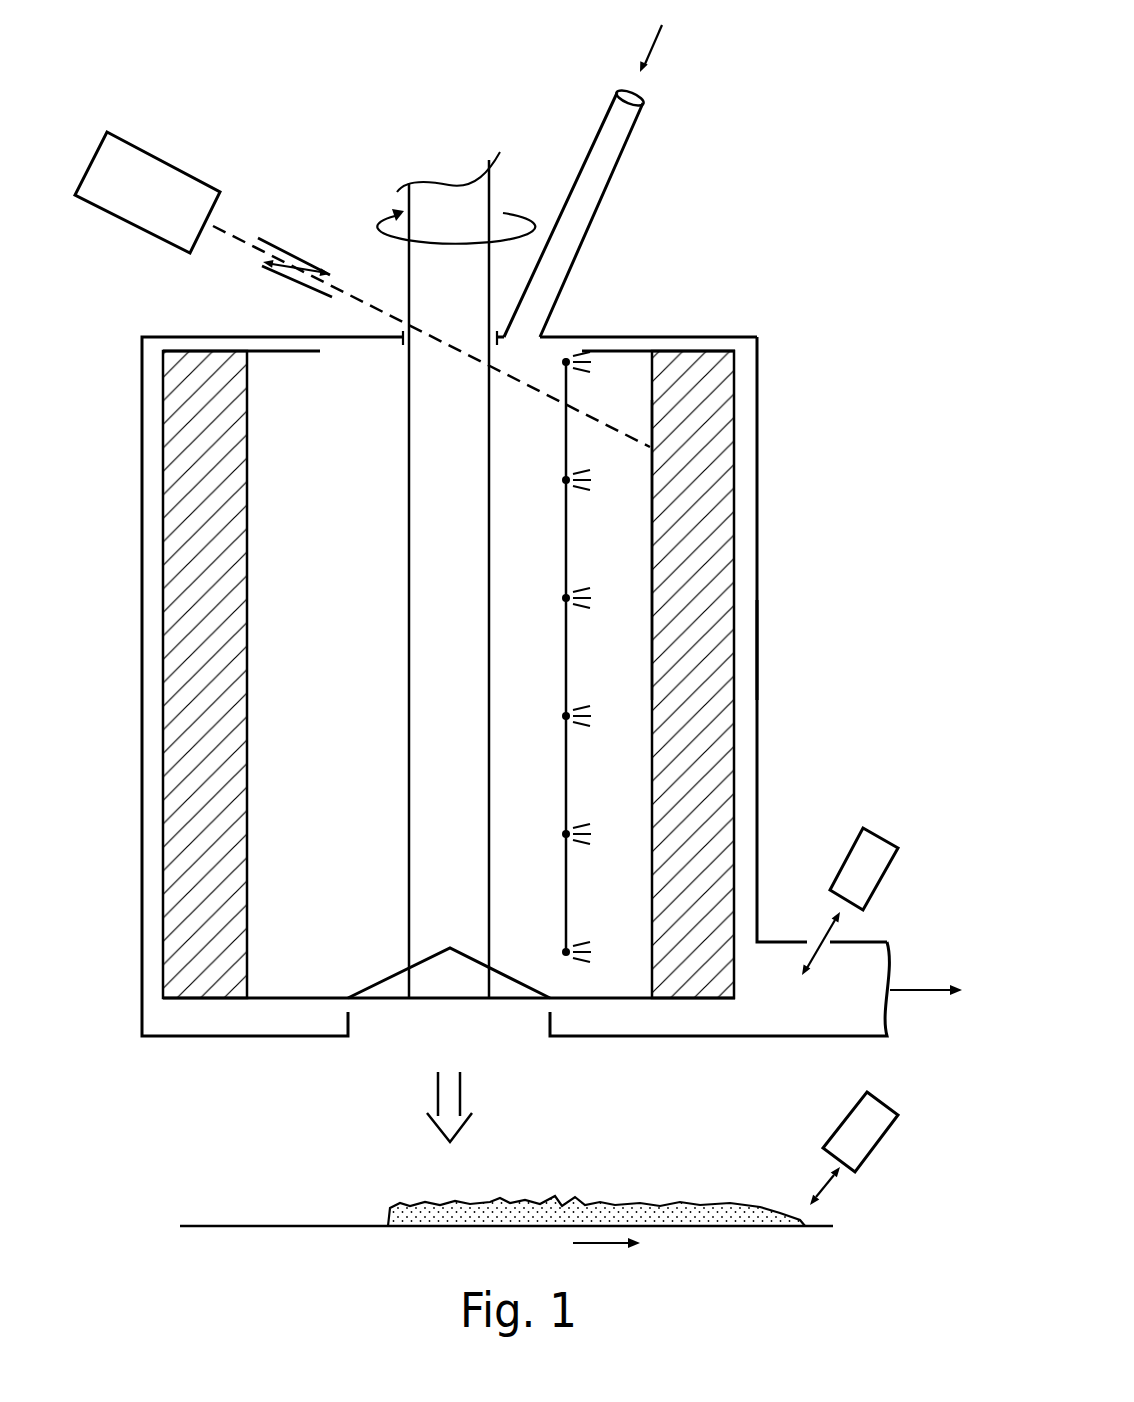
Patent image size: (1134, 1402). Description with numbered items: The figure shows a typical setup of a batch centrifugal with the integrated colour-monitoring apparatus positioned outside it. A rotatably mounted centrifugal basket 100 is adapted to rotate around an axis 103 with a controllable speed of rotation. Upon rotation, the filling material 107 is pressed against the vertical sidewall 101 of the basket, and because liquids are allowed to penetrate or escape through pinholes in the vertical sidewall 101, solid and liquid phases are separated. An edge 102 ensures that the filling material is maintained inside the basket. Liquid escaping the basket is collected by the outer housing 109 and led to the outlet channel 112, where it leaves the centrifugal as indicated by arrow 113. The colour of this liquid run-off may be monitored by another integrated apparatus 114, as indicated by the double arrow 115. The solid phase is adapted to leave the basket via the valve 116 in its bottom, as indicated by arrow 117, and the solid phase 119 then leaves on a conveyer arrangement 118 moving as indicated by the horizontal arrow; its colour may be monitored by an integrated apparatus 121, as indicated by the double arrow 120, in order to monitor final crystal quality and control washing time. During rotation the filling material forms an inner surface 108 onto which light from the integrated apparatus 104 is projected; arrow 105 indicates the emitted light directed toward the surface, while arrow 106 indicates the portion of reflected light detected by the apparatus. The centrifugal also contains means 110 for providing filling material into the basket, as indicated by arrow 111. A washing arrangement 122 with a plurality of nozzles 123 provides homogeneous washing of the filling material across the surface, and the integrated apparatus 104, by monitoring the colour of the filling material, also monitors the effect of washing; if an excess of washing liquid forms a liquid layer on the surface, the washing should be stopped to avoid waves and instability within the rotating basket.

The centrifugal basket 100 is at (283, 982).
The vertical sidewall 101 is at (737, 765).
The edge 102 is at (302, 352).
The axis 103 is at (448, 192).
The integrated apparatus 104 is at (160, 172).
The arrow 105 is at (300, 237).
The arrow 106 is at (293, 278).
The filling material 107 is at (720, 470).
The inner surface 108 is at (651, 535).
The outer housing 109 is at (757, 647).
The means for providing filling material 110 is at (605, 155).
The arrow 111 is at (669, 36).
The outlet channel 112 is at (680, 1040).
The arrow 113 is at (929, 1005).
The integrated apparatus 114 is at (880, 835).
The double arrow 115 is at (832, 948).
The valve 116 is at (393, 970).
The arrow 117 is at (452, 1095).
The conveyer arrangement 118 is at (300, 1224).
The solid phase 119 is at (720, 1228).
The double arrow 120 is at (825, 1185).
The integrated apparatus 121 is at (870, 1130).
The washing arrangement 122 is at (565, 648).
The nozzles 123 is at (575, 710).